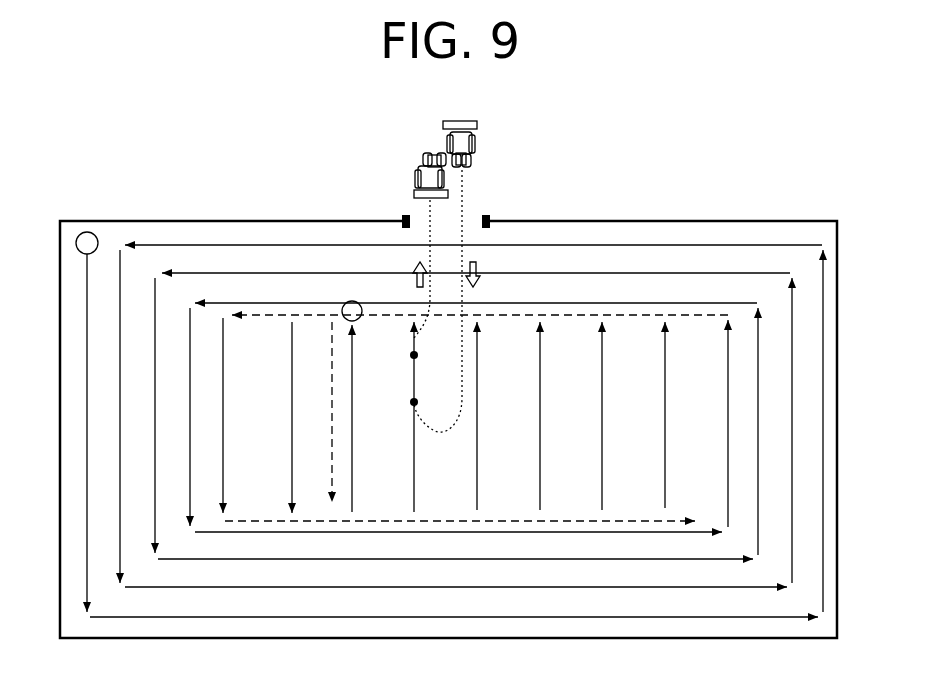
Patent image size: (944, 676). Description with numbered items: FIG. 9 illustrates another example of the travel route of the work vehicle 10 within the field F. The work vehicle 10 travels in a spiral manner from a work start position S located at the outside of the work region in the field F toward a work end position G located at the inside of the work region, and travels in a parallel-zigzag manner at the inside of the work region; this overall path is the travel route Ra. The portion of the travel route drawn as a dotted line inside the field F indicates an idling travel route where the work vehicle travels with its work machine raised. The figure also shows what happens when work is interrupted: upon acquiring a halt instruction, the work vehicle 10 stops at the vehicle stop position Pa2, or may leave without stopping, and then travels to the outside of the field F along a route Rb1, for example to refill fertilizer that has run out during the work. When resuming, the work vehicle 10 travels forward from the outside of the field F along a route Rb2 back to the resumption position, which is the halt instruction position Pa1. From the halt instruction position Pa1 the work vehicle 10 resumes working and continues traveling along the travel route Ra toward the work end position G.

The work vehicle 10 is at (408, 174).
The field F is at (730, 220).
The travel route Ra is at (449, 398).
The route Rb1 is at (424, 258).
The route Rb2 is at (470, 258).
The halt instruction position Pa1 is at (395, 402).
The vehicle stop position Pa2 is at (395, 355).
The work start position S is at (87, 243).
The work end position G is at (352, 311).